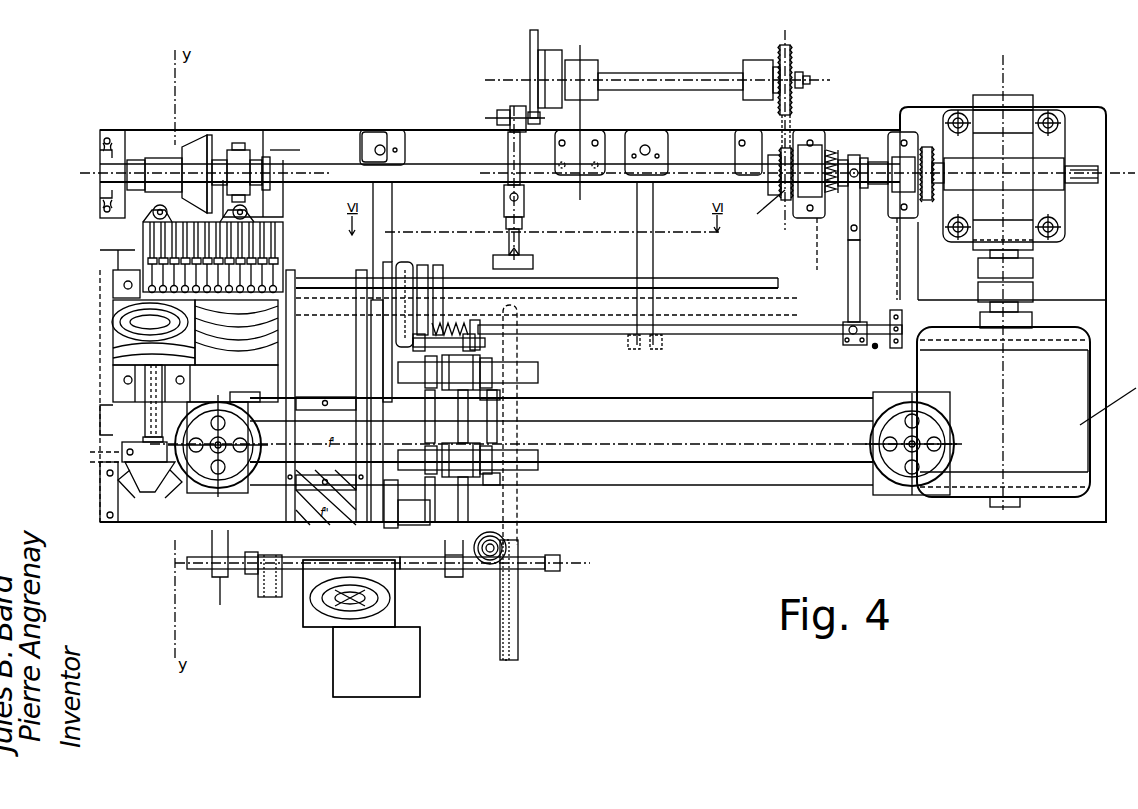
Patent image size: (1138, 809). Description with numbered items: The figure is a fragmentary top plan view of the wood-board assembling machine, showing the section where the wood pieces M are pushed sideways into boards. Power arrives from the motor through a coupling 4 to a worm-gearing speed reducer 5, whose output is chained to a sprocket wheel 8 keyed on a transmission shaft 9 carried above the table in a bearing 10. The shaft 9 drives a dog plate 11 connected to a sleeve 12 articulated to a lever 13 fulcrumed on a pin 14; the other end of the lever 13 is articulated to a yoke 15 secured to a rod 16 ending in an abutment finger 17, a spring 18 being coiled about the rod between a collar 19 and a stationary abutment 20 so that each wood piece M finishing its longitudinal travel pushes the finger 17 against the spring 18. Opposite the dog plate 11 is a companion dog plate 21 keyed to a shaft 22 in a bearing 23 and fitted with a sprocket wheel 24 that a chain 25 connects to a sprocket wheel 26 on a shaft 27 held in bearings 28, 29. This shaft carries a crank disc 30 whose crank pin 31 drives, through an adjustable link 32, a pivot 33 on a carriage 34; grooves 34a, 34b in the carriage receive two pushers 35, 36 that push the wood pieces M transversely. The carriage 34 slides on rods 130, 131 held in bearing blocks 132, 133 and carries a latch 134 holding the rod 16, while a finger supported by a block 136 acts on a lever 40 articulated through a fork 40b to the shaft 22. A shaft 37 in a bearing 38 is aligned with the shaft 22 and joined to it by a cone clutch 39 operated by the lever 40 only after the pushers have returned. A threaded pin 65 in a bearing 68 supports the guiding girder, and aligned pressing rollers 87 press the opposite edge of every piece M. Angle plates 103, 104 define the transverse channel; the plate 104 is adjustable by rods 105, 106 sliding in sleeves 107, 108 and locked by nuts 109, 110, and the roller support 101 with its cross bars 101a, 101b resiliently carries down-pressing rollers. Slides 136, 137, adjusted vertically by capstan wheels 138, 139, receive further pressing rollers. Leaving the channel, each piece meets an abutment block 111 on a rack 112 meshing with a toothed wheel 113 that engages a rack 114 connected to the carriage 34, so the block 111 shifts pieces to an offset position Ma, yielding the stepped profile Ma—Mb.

The coupling 4 is at (1030, 292).
The worm-gearing speed reducer 5 is at (1020, 165).
The sprocket wheel 8 is at (927, 150).
The transmission shaft 9 is at (876, 160).
The bearing 10 is at (905, 158).
The dog plate 11 is at (845, 157).
The sleeve 12 is at (855, 157).
The lever 13 is at (858, 266).
The pin 14 is at (850, 228).
The yoke 15 is at (856, 345).
The rod 16 is at (795, 336).
The abutment finger 17 is at (385, 270).
The spring 18 is at (440, 268).
The collar 19 is at (425, 268).
The stationary abutment 20 is at (482, 333).
The companion dog plate 21 is at (828, 150).
The shaft 22 is at (690, 163).
The bearing 23 is at (813, 130).
The sprocket wheel 24 is at (761, 207).
The chain 25 is at (788, 126).
The sprocket wheel 26 is at (778, 50).
The shaft 27 is at (660, 75).
The bearing 28 is at (745, 62).
The bearing 29 is at (586, 66).
The crank disc 30 is at (530, 50).
The crank pin 31 is at (507, 115).
The adjustable link 32 is at (508, 147).
The pivot 33 is at (525, 263).
The carriage 34 is at (682, 276).
The groove 34a is at (762, 299).
The groove 34b is at (762, 316).
The pusher 35 is at (358, 270).
The pusher 36 is at (292, 268).
The shaft 37 is at (152, 160).
The bearing 38 is at (108, 128).
The cone clutch 39 is at (200, 145).
The lever 40 is at (268, 197).
The fork 40b is at (240, 165).
The threaded pin 65 is at (145, 422).
The bearing 68 is at (125, 453).
The pressing roller 87 is at (120, 305).
The pulley 101 is at (218, 444).
The cross bar 101a is at (290, 381).
The cross bar 101b is at (390, 500).
The angle plate 103 is at (192, 568).
The angle plate 104 is at (425, 557).
The rod 105 is at (535, 372).
The rod 106 is at (540, 462).
The stationary sleeve 107 is at (498, 398).
The stationary sleeve 108 is at (490, 475).
The lock nut 109 is at (490, 392).
The lock nut 110 is at (483, 453).
The abutment block 111 is at (270, 597).
The rack 112 is at (419, 572).
The toothed wheel 113 is at (481, 564).
The rack 114 is at (518, 623).
The rod 130 is at (393, 211).
The rod 131 is at (652, 200).
The bearing block 132 is at (358, 130).
The bearing block 133 is at (653, 130).
The latch 134 is at (400, 262).
The slide 136 is at (710, 410).
The slide 137 is at (675, 482).
The capstan wheel 138 is at (205, 455).
The capstan wheel 139 is at (915, 490).
The wood piece M is at (130, 333).
The offset position Ma is at (303, 621).
The offset position Mb is at (333, 658).